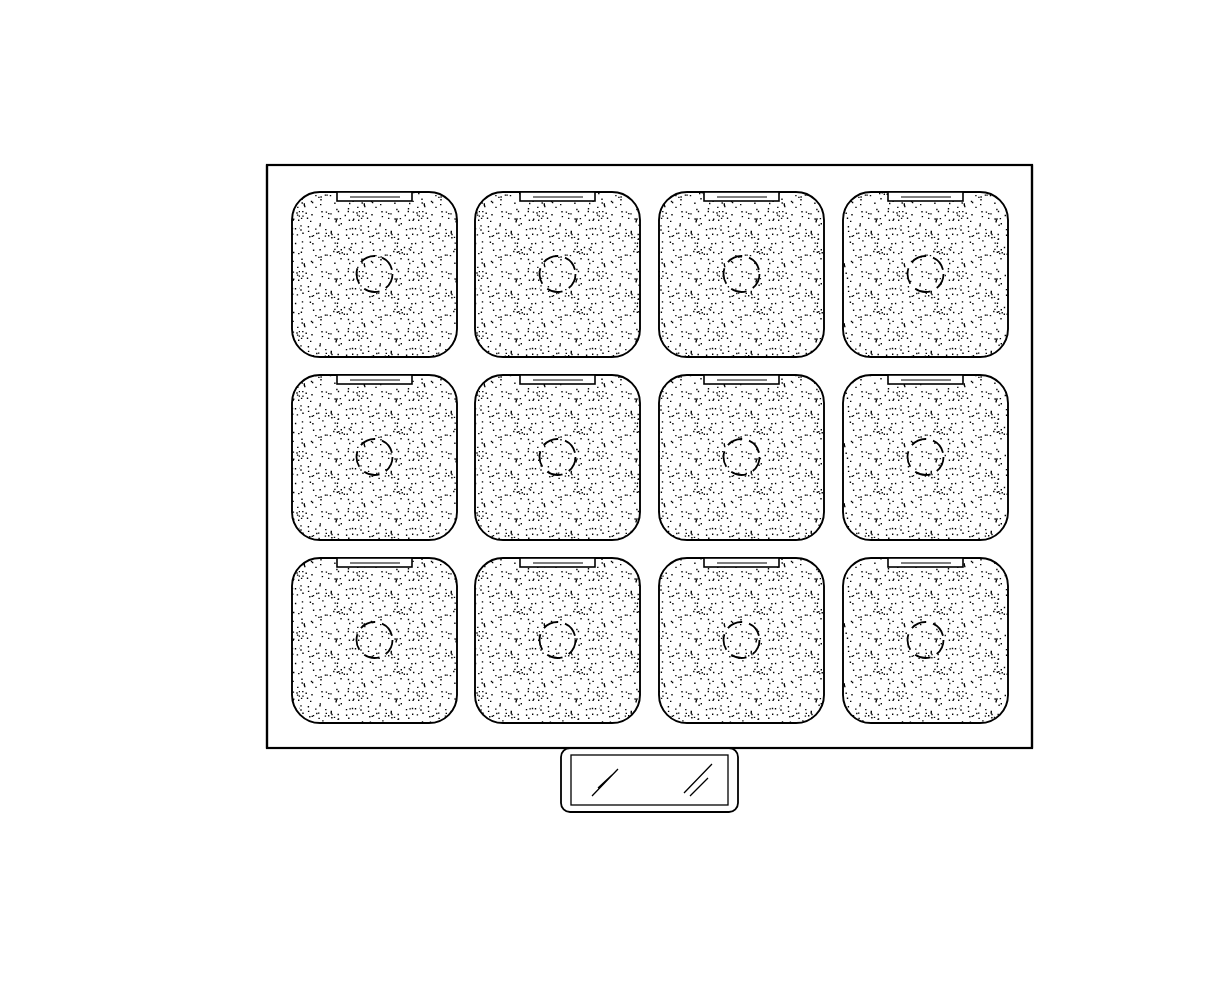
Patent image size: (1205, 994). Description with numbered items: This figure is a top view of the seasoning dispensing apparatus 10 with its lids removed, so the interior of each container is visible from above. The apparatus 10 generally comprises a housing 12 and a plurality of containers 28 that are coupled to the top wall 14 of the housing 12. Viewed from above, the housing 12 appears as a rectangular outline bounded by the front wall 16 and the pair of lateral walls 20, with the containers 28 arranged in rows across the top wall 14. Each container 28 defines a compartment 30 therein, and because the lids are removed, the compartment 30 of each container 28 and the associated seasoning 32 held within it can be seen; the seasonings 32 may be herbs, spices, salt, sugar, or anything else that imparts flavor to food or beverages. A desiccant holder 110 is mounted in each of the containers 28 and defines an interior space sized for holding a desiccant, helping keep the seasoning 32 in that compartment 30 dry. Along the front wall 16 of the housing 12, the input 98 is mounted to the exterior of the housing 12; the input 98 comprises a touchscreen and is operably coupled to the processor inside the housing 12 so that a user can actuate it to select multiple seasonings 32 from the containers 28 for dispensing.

The seasoning dispensing apparatus 10 is at (990, 112).
The housing 12 is at (243, 163).
The top wall 14 is at (796, 180).
The front wall 16 is at (920, 748).
The lateral walls 20 is at (1032, 485).
The containers 28 is at (628, 200).
The compartment 30 is at (500, 228).
The seasonings 32 is at (612, 250).
The input 98 is at (601, 787).
The desiccant holders 110 is at (557, 196).